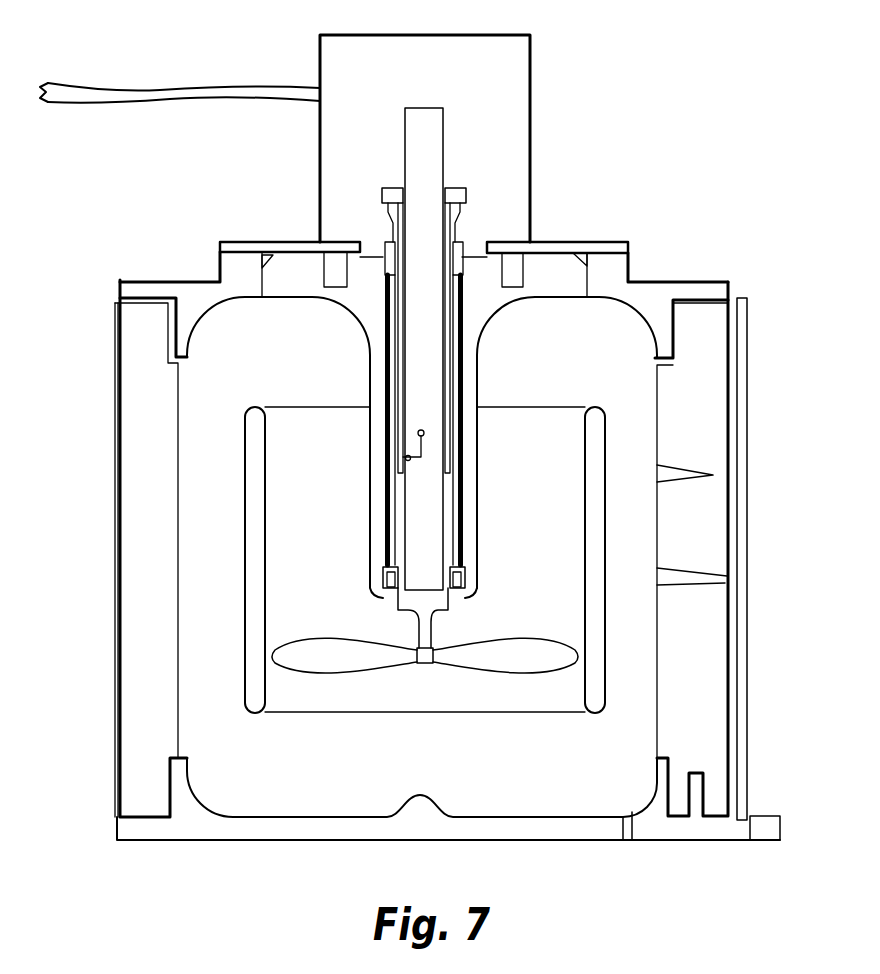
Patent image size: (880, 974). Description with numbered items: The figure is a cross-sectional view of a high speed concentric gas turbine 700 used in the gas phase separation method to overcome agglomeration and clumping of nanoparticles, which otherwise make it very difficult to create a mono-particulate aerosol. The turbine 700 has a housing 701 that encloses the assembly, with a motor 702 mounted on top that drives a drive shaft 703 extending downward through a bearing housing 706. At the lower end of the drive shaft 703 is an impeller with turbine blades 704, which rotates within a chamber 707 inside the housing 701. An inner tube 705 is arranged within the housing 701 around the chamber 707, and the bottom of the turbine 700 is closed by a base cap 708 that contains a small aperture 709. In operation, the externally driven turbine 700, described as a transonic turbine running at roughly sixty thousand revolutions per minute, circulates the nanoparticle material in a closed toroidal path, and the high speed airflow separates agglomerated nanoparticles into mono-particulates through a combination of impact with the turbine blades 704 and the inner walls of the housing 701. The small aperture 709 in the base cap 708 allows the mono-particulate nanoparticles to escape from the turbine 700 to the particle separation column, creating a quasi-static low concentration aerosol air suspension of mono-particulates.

The high speed concentric gas turbine 700 is at (706, 86).
The housing 701 is at (145, 330).
The motor 702 is at (393, 70).
The drive shaft 703 is at (420, 260).
The turbine blades 704 is at (667, 631).
The inner tube 705 is at (255, 467).
The bearing housing 706 is at (297, 277).
The chamber 707 is at (215, 627).
The base cap 708 is at (215, 827).
The aperture 709 is at (625, 840).